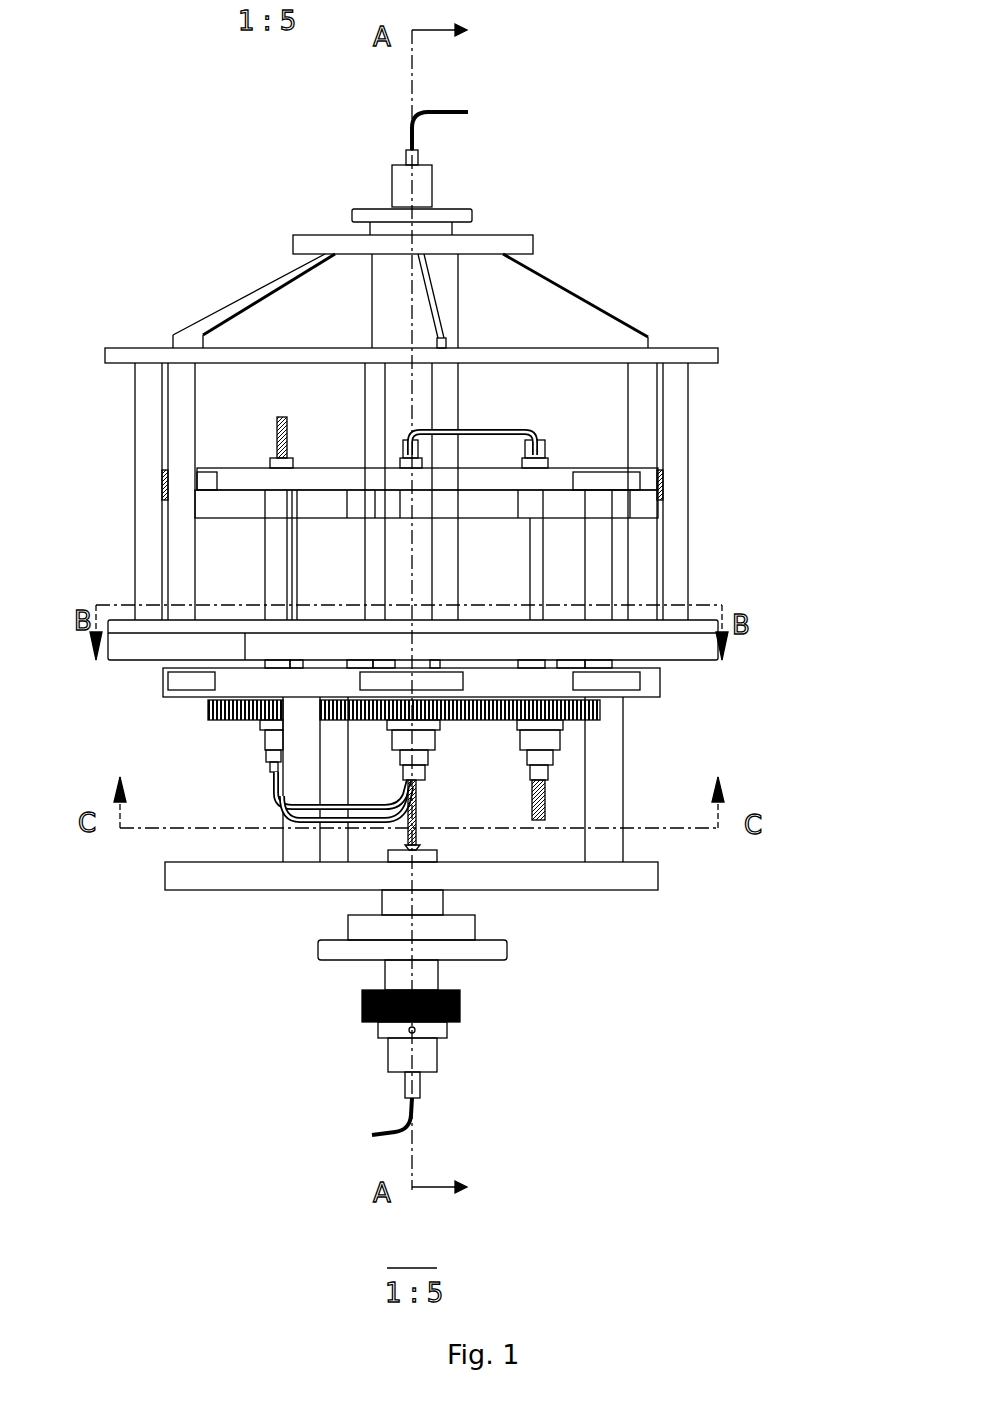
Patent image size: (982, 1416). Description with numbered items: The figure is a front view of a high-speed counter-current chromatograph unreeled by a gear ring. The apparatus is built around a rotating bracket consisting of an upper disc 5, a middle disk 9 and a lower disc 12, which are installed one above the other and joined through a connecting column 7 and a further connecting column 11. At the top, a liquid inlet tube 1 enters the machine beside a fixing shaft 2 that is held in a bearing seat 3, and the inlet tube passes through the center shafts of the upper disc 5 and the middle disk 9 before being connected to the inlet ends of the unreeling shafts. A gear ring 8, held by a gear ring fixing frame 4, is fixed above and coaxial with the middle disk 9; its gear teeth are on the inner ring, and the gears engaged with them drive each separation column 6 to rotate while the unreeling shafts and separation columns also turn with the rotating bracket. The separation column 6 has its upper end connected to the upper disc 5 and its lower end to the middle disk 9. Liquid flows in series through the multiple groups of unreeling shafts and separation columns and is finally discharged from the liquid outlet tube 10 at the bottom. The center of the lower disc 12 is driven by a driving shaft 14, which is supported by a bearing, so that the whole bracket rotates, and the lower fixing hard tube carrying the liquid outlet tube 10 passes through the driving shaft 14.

The liquid inlet tube 1 is at (470, 112).
The fixing shaft 2 is at (427, 185).
The bearing seat 3 is at (452, 217).
The gear ring fixing frame 4 is at (455, 320).
The upper disc 5 is at (542, 480).
The separation column 6 is at (632, 540).
The connecting column 7 is at (600, 583).
The gear ring 8 is at (637, 647).
The middle disk 9 is at (638, 682).
The liquid outlet tube 10 is at (430, 797).
The connecting column 11 is at (613, 847).
The lower disc 12 is at (590, 877).
The driving shaft 14 is at (423, 975).